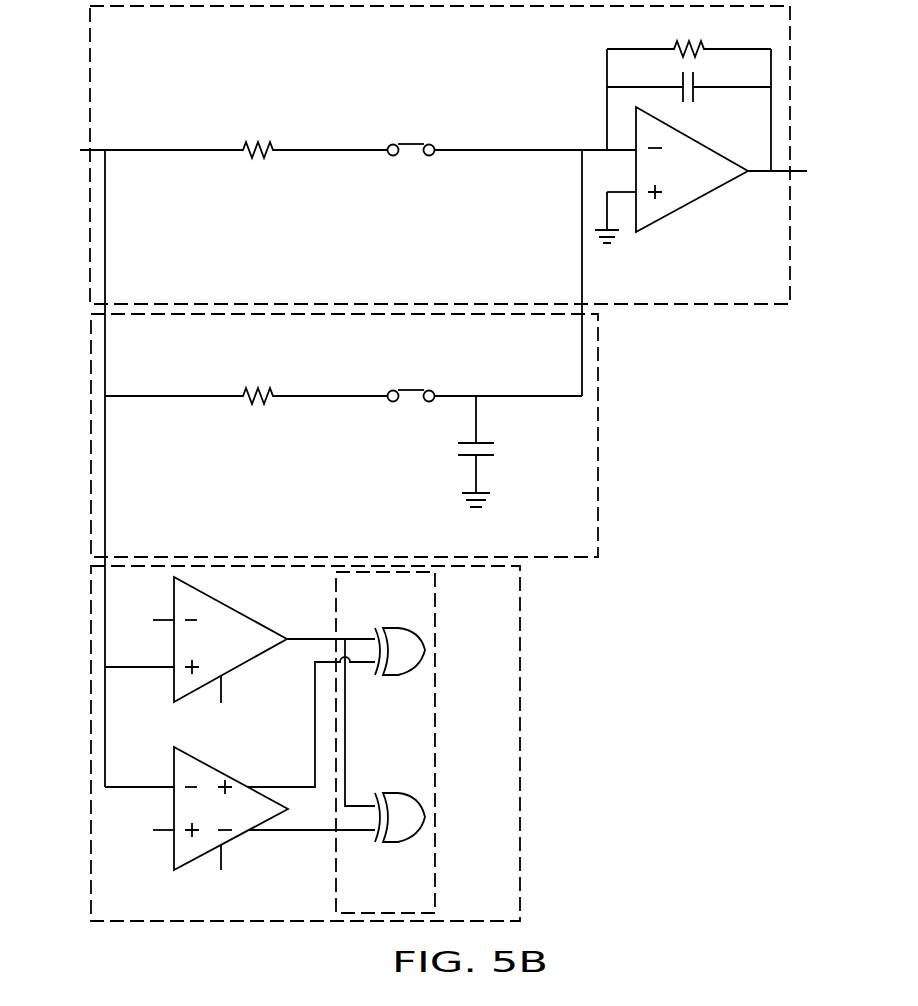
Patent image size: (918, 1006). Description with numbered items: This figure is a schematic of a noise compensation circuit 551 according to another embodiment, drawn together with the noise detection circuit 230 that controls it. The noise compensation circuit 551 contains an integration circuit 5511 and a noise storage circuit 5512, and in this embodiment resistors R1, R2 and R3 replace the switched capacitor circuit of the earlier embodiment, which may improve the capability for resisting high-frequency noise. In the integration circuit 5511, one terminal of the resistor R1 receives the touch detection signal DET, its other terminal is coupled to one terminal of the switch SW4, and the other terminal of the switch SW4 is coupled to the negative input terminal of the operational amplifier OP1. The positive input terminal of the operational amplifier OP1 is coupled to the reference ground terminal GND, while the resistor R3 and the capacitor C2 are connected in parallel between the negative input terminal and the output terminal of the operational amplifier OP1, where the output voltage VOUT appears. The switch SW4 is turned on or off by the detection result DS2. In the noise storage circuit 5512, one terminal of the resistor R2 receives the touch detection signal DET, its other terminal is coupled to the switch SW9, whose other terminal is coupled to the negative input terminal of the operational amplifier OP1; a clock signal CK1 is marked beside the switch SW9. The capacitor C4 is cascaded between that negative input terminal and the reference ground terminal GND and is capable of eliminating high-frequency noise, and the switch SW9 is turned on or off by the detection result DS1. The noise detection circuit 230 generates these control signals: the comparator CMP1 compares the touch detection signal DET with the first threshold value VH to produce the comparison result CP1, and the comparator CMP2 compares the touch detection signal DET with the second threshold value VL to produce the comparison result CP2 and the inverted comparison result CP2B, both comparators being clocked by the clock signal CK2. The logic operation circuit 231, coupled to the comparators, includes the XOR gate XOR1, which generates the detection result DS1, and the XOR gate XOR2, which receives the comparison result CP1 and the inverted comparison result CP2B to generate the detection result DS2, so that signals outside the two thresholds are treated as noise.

The integration circuit 5511 is at (790, 248).
The noise storage circuit 5512 is at (598, 497).
The noise detection circuit 230 is at (520, 770).
The logic operation circuit 231 is at (435, 762).
The noise compensation circuit 551 is at (697, 913).
The touch detection signal DET is at (136, 461).
The resistor R1 is at (257, 133).
The switch SW4 is at (400, 142).
The detection result DS2 is at (411, 141).
The operational amplifier OP1 is at (703, 197).
The resistor R3 is at (689, 33).
The capacitor C2 is at (689, 95).
The output voltage VOUT is at (807, 169).
The reference ground terminal GND is at (542, 369).
The resistor R2 is at (190, 380).
The switch SW9 is at (400, 388).
The detection result DS1 is at (412, 387).
The clock signal CK1 is at (405, 445).
The capacitor C4 is at (491, 433).
The comparator CMP1 is at (173, 680).
The first threshold value VH is at (148, 619).
The clock signal CK2 is at (223, 793).
The comparison result CP1 is at (293, 634).
The comparator CMP2 is at (173, 855).
The second threshold value VL is at (148, 830).
The comparison result CP2 is at (273, 785).
The inverted comparison result CP2B is at (292, 832).
The XOR gate XOR1 is at (400, 678).
The XOR gate XOR2 is at (400, 845).